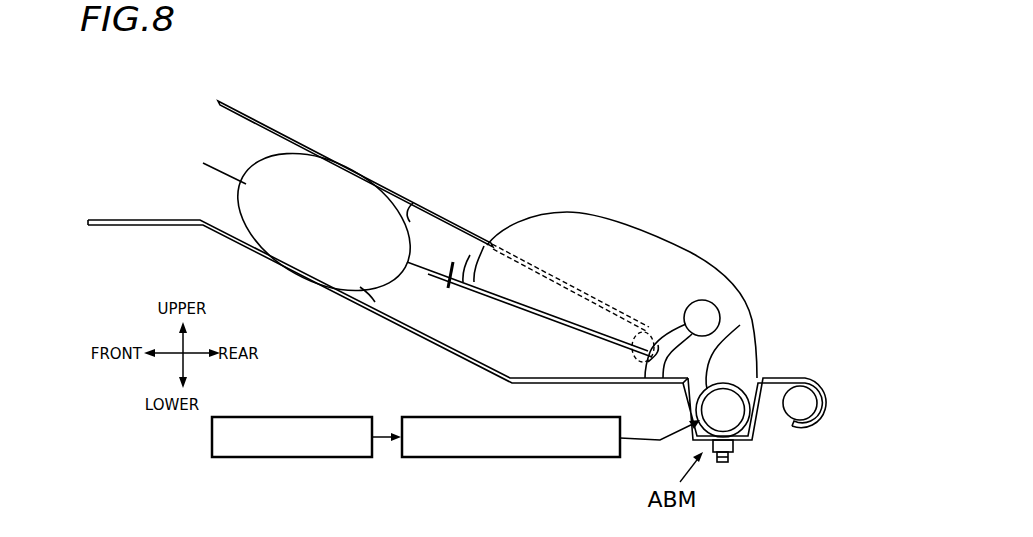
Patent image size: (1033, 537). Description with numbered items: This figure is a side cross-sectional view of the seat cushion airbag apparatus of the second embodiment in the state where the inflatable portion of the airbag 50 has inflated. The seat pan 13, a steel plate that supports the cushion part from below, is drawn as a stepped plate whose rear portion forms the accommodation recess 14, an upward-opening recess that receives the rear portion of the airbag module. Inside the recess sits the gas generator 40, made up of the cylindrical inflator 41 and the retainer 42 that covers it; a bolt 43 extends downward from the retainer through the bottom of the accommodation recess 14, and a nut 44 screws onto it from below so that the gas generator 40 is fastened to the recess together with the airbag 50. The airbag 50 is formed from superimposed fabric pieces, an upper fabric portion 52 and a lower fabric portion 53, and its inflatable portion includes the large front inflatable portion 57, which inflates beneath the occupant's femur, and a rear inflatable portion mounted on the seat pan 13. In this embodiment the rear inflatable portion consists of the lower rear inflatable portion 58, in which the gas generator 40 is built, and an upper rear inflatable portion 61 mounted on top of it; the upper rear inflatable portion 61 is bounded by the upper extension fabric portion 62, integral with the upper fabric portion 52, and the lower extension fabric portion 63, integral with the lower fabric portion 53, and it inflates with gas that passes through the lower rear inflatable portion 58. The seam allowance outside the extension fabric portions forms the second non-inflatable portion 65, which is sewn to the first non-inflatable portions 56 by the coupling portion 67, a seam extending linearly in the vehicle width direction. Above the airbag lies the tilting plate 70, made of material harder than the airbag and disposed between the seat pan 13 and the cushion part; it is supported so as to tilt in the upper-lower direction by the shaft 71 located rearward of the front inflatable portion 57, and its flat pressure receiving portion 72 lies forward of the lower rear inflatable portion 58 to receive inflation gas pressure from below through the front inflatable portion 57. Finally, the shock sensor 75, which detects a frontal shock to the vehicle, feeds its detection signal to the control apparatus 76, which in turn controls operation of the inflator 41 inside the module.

The seat pan 13 is at (223, 233).
The accommodation recess 14 is at (747, 372).
The gas generator 40 is at (744, 357).
The inflator 41 is at (740, 325).
The retainer 42 is at (723, 383).
The bolt 43 is at (722, 464).
The nut 44 is at (735, 452).
The airbag 50 is at (519, 204).
The upper fabric portion 52 is at (419, 173).
The lower fabric portion 53 is at (373, 291).
The first non-inflatable portion 56 is at (508, 302).
The front inflatable portion 57 is at (410, 218).
The lower rear inflatable portion 58 is at (648, 362).
The upper rear inflatable portion 61 is at (610, 220).
The upper extension fabric portion 62 is at (555, 322).
The lower extension fabric portion 63 is at (656, 198).
The second non-inflatable portion 65 is at (482, 243).
The coupling portion 67 is at (448, 290).
The tilting plate 70 is at (355, 160).
The shaft 71 is at (630, 335).
The pressure receiving portion 72 is at (262, 122).
The shock sensor 75 is at (354, 460).
The control apparatus 76 is at (532, 458).